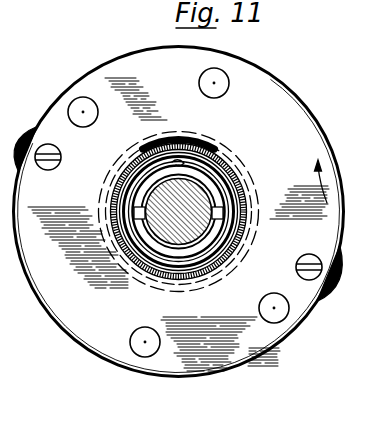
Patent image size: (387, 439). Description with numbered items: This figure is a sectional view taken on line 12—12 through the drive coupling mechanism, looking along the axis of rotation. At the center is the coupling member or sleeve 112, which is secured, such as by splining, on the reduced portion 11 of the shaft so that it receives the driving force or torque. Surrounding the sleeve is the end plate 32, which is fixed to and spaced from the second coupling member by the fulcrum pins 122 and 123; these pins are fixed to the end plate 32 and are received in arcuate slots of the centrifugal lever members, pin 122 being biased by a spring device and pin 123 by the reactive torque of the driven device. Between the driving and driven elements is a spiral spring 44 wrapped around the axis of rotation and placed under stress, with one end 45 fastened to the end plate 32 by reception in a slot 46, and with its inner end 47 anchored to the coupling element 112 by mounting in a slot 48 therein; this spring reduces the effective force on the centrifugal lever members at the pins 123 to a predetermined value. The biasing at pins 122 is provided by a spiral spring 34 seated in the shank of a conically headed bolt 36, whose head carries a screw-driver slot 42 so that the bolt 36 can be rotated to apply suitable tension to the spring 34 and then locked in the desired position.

The reduced portion of the shaft 11 is at (148, 229).
The ring 12 is at (212, 181).
The end plate 32 is at (269, 103).
The spiral spring 34 is at (24, 133).
The conically headed bolt 36 is at (57, 167).
The screw-driver slot 42 is at (61, 152).
The spiral spring 44 is at (236, 231).
The end of spiral spring 45 is at (176, 134).
The slot 46 is at (192, 129).
The inner end of spring 47 is at (108, 182).
The slot 48 is at (233, 163).
The coupling member or sleeve 112 is at (190, 254).
The fulcrum pin 122 is at (84, 97).
The fulcrum pin 123 is at (228, 81).